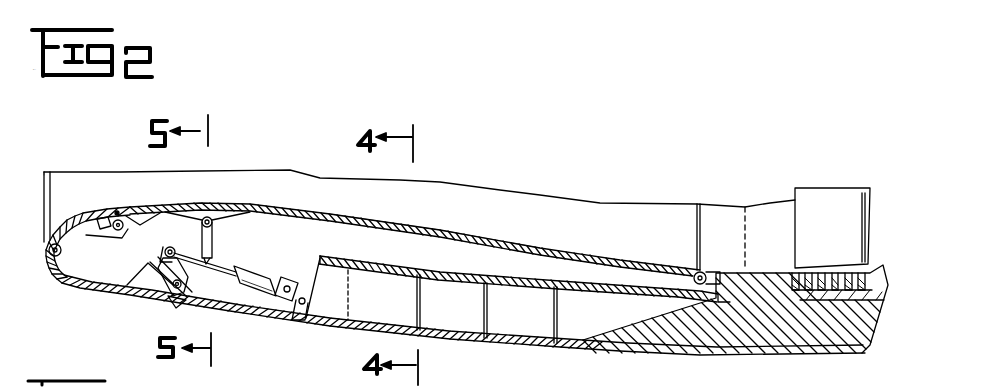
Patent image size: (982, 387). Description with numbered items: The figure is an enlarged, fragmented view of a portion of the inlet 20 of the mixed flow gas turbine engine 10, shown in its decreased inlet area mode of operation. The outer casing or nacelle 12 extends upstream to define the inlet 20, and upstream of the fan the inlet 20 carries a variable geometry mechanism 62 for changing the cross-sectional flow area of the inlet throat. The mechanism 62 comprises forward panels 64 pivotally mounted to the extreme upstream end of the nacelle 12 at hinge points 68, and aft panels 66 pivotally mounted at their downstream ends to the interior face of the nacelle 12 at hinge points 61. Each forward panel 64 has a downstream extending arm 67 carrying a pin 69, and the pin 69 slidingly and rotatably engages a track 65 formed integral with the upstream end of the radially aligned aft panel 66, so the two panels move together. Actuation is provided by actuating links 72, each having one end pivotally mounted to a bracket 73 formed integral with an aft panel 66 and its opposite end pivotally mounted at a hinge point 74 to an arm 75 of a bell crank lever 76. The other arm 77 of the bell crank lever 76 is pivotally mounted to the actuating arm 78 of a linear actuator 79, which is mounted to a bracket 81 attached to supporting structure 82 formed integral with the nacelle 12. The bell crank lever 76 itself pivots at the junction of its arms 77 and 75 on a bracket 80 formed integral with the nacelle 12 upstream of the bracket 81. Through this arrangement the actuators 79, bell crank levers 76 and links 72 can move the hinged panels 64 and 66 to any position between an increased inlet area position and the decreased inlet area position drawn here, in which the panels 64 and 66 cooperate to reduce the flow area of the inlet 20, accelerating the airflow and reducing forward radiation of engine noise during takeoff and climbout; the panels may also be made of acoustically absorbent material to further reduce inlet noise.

The mixed flow gas turbine engine 10 is at (152, 303).
The outer casing or nacelle 12 is at (699, 352).
The inlet 20 is at (360, 203).
The hinge points 61 is at (704, 272).
The variable geometry mechanism 62 is at (418, 228).
The forward panels 64 is at (108, 216).
The track 65 is at (140, 210).
The aft panels 66 is at (498, 240).
The arm 67 is at (111, 240).
The hinge points 68 is at (62, 252).
The pin 69 is at (117, 212).
The actuating links 72 is at (202, 235).
The brackets 73 is at (212, 218).
The hinge points 74 is at (205, 265).
The arms 75 is at (190, 279).
The bell crank levers 76 is at (174, 307).
The other arms 77 is at (166, 248).
The actuating arms 78 is at (255, 274).
The linear actuators 79 is at (289, 277).
The bracket 80 is at (146, 285).
The brackets 81 is at (303, 320).
The supporting structure 82 is at (476, 334).